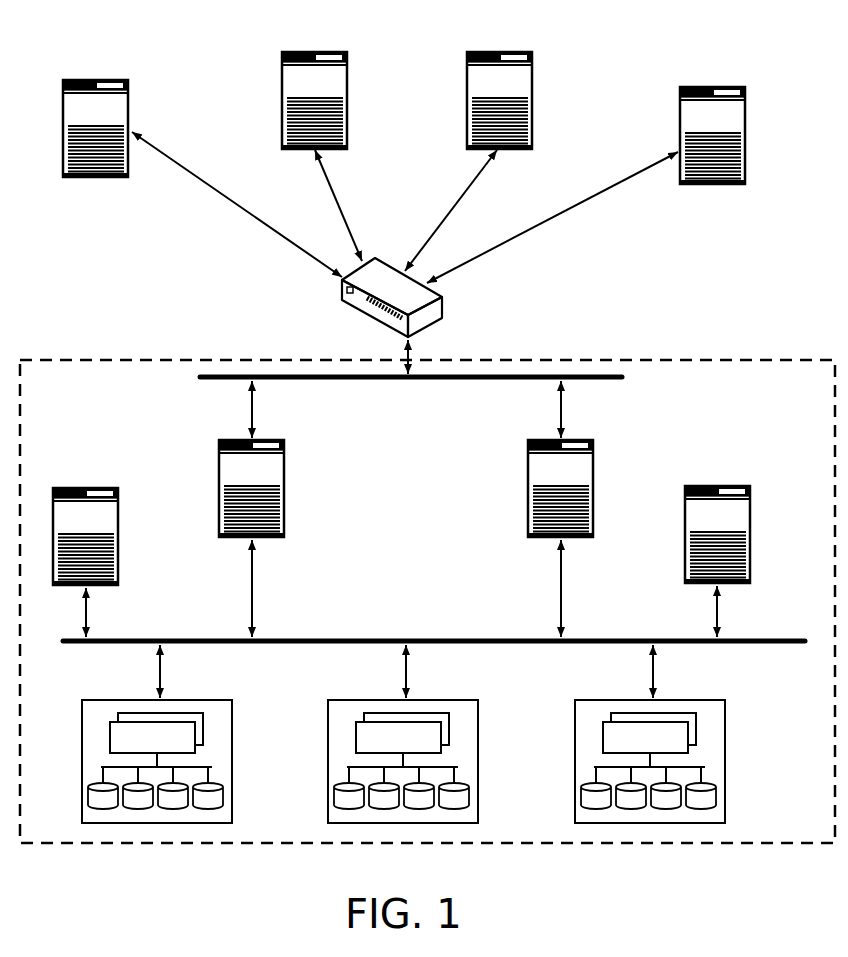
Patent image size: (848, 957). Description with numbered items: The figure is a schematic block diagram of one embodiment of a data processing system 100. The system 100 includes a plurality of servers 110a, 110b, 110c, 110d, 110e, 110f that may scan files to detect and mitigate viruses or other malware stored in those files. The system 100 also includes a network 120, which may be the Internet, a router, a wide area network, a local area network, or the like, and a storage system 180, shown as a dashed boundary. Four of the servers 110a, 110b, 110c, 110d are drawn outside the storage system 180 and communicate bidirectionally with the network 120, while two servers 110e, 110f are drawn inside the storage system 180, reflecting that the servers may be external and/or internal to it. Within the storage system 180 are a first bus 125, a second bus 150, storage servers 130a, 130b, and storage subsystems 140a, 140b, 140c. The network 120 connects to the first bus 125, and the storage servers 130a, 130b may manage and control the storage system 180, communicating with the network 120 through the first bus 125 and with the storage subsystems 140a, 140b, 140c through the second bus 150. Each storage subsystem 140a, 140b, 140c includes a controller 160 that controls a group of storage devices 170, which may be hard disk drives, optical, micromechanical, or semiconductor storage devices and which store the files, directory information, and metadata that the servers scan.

The data processing system 100 is at (82, 51).
The server 110a is at (133, 82).
The server 110b is at (348, 68).
The server 110c is at (533, 68).
The server 110d is at (748, 93).
The server 110e is at (120, 495).
The server 110f is at (752, 493).
The network 120 is at (433, 297).
The first bus 125 is at (287, 377).
The storage server 130a is at (287, 462).
The storage server 130b is at (595, 450).
The storage subsystem 140a is at (233, 700).
The storage subsystem 140b is at (479, 700).
The storage subsystem 140c is at (726, 700).
The second bus 150 is at (343, 638).
The controller 160 is at (110, 743).
The storage device 170 is at (89, 793).
The storage system 180 is at (680, 360).